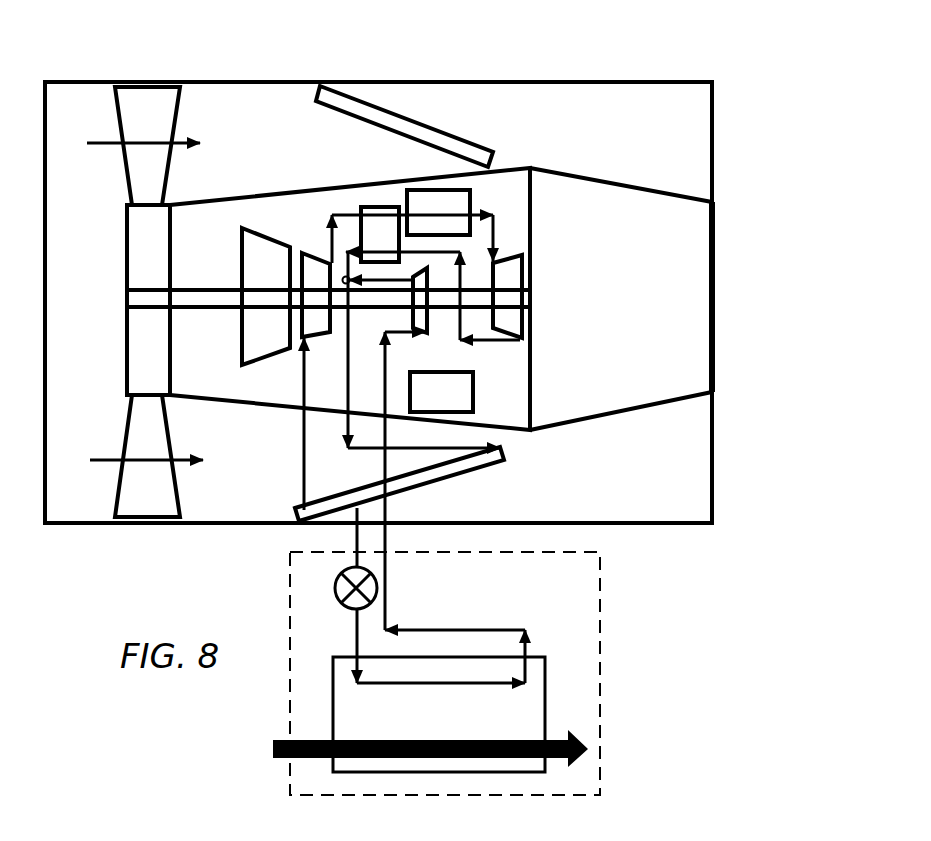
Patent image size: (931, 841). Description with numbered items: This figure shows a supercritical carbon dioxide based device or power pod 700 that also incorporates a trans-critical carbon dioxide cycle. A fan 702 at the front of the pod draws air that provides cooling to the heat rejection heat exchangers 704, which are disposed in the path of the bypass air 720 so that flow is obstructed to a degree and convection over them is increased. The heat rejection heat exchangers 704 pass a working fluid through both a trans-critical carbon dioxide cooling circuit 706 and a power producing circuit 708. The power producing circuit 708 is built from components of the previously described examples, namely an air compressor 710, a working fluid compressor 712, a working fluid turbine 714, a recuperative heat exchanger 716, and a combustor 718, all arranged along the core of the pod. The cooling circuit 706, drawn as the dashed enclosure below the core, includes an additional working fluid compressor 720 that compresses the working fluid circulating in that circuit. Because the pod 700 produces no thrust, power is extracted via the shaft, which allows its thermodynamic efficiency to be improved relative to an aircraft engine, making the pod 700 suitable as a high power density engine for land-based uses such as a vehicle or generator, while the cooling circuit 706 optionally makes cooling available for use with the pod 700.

The power pod 700 is at (686, 54).
The fan 702 is at (179, 106).
The heat rejection heat exchangers 704 is at (406, 118).
The trans-critical CO2 circuit 706 is at (603, 600).
The power producing circuit 708 is at (325, 168).
The air compressor 710 is at (256, 366).
The working fluid compressor 712 is at (309, 252).
The working fluid turbine 714 is at (512, 256).
The recuperative heat exchanger 716 is at (377, 206).
The combustor 718 is at (458, 189).
The working fluid compressor 720 is at (98, 140).